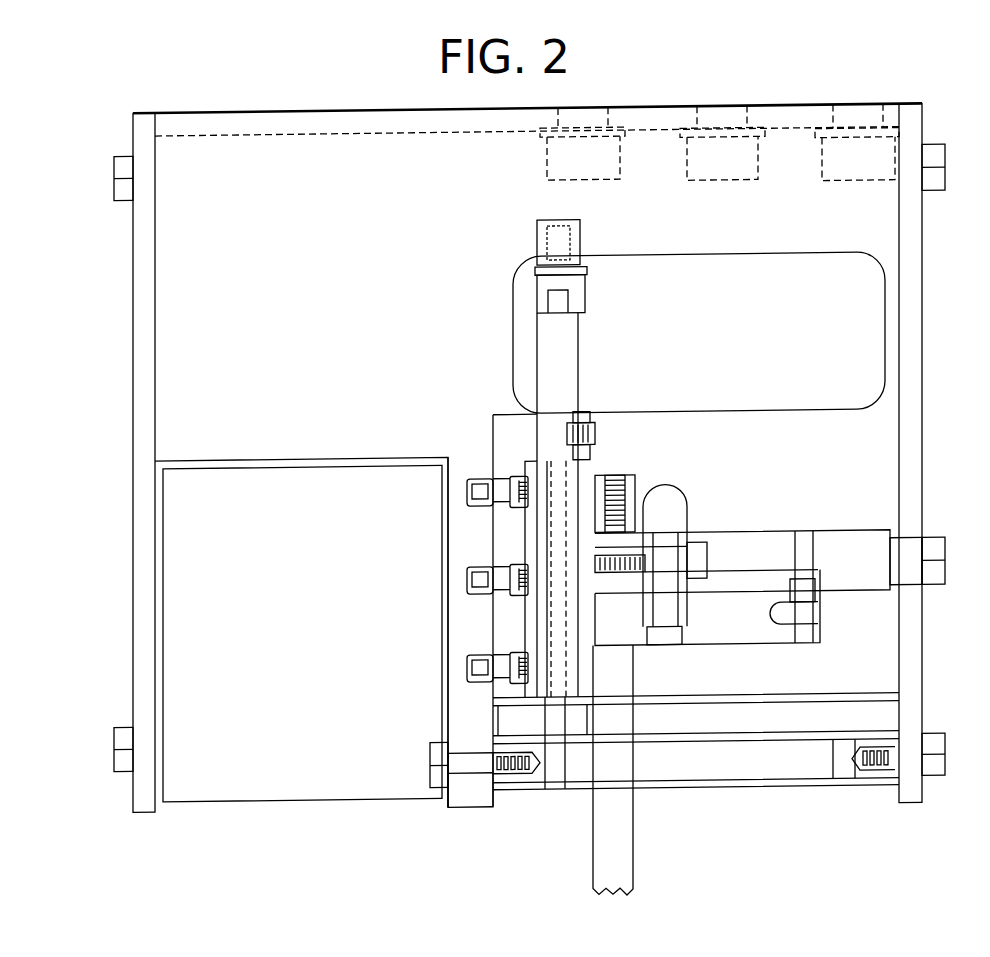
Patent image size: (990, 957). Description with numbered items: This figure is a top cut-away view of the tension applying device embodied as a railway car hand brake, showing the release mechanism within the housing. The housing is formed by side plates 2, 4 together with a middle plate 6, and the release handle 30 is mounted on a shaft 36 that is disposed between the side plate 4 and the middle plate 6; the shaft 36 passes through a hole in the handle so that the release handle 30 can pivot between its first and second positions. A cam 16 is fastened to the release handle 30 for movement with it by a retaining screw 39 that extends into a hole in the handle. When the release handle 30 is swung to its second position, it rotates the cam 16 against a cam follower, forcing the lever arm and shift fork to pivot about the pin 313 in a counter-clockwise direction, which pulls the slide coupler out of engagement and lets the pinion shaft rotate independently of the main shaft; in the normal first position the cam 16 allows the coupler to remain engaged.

The side plate 2 is at (148, 314).
The side plate 4 is at (918, 250).
The middle plate 6 is at (468, 743).
The cam 16 is at (678, 514).
The release handle 30 is at (622, 858).
The shaft 36 is at (860, 554).
The retaining screw 39 is at (705, 557).
The pin 313 is at (553, 778).